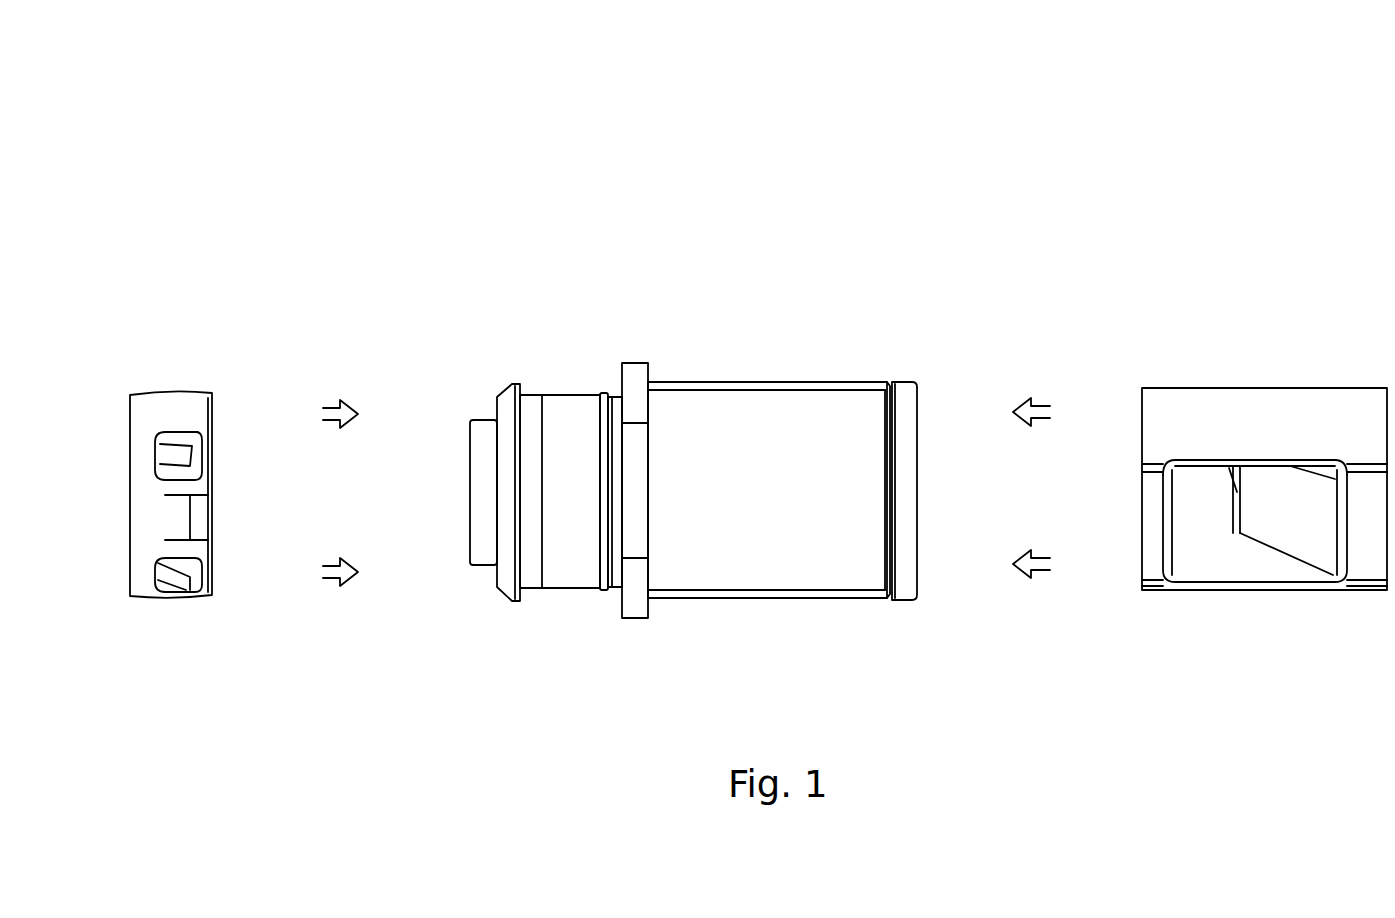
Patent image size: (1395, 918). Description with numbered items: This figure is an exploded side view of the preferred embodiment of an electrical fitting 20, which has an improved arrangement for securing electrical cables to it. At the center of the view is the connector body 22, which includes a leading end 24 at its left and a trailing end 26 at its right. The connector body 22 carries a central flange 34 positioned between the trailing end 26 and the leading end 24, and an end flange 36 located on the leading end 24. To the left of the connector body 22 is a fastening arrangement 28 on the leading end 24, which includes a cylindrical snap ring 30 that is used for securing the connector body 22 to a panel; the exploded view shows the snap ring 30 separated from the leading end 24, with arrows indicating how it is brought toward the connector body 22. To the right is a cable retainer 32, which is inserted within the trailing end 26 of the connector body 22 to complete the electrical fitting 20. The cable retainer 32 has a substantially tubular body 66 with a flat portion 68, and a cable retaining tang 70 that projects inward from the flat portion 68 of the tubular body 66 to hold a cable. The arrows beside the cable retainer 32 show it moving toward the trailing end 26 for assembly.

The electrical fitting 20 is at (405, 158).
The connector body 22 is at (775, 382).
The leading end 24 is at (470, 492).
The trailing end 26 is at (918, 490).
The fastening arrangement 28 is at (250, 648).
The cylindrical snap ring 30 is at (170, 390).
The cable retainer 32 is at (1264, 444).
The central flange 34 is at (633, 363).
The end flange 36 is at (517, 382).
The tubular body 66 is at (1277, 435).
The flat portion 68 is at (1377, 539).
The cable retaining tang 70 is at (1304, 521).